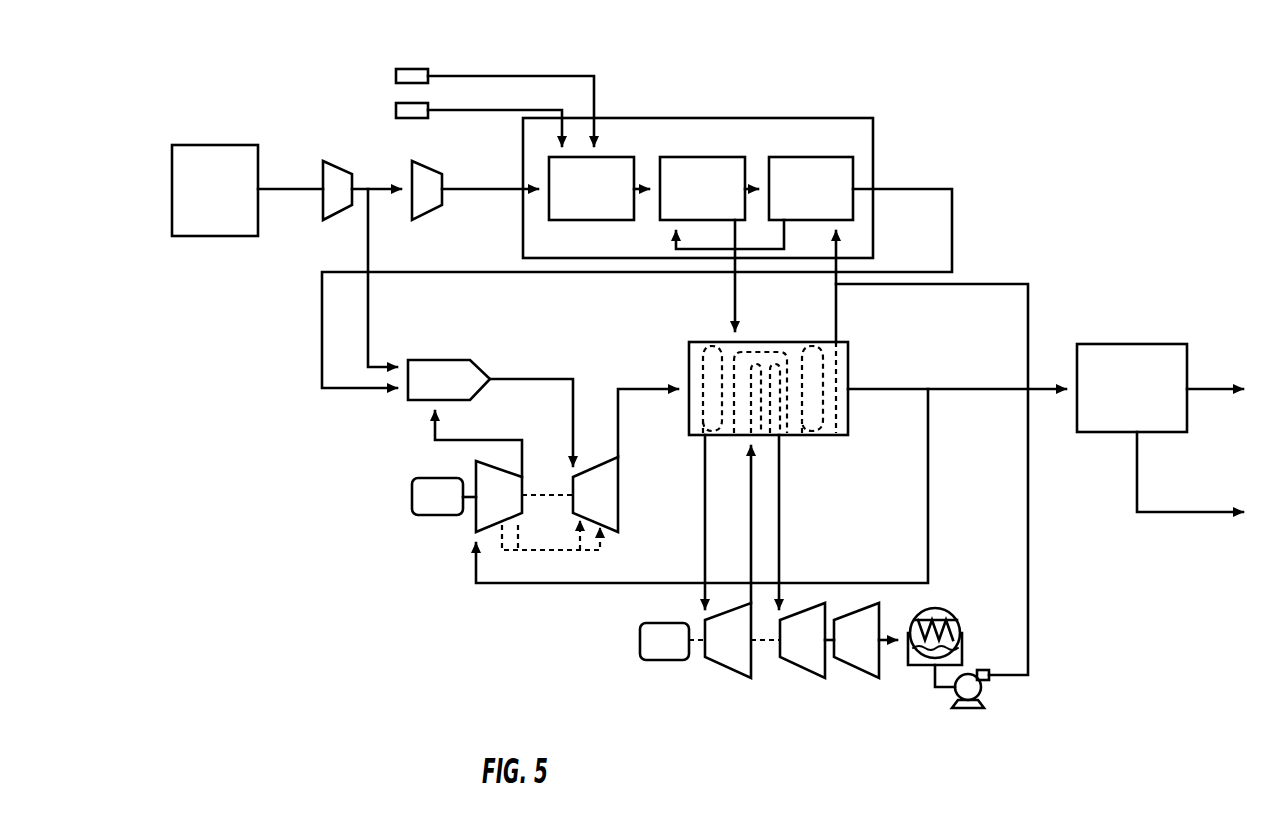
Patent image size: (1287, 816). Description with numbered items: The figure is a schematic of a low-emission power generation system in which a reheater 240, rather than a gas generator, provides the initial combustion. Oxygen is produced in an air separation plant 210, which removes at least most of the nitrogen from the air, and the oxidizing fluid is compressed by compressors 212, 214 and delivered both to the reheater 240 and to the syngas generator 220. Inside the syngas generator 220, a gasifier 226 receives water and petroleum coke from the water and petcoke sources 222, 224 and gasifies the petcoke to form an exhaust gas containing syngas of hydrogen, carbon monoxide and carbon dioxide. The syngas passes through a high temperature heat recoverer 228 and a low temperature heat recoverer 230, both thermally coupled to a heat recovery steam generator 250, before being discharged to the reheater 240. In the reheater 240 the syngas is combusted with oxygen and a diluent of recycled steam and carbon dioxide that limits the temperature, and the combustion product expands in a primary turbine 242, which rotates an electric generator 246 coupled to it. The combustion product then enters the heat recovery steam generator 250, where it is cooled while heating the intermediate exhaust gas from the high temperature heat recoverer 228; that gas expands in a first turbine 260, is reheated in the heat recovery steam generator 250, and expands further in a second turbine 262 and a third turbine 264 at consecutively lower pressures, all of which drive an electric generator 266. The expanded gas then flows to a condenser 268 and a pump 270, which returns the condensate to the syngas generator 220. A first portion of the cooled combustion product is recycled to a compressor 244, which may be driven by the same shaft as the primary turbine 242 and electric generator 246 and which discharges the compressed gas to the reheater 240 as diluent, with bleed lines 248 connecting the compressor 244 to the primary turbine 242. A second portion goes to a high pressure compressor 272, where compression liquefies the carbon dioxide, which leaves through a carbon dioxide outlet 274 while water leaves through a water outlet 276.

The air separation plant 210 is at (237, 236).
The compressor 212 is at (323, 163).
The compressor 214 is at (412, 162).
The syngas generator 220 is at (873, 138).
The water source 222 is at (396, 69).
The petcoke source 224 is at (405, 155).
The gasifier 226 is at (618, 157).
The high temperature heat recoverer 228 is at (705, 157).
The low temperature heat recoverer 230 is at (805, 157).
The reheater 240 is at (408, 400).
The primary turbine 242 is at (615, 535).
The compressor 244 is at (476, 523).
The electric generator 246 is at (412, 497).
The bleed lines 248 is at (525, 552).
The heat recovery steam generator 250 is at (848, 373).
The first turbine 260 is at (727, 668).
The second turbine 262 is at (800, 670).
The third turbine 264 is at (855, 670).
The electric generator 266 is at (655, 660).
The condenser 268 is at (930, 665).
The pump 270 is at (983, 697).
The high pressure compressor 272 is at (1107, 344).
The carbon dioxide outlet 274 is at (1207, 389).
The water outlet 276 is at (1198, 512).